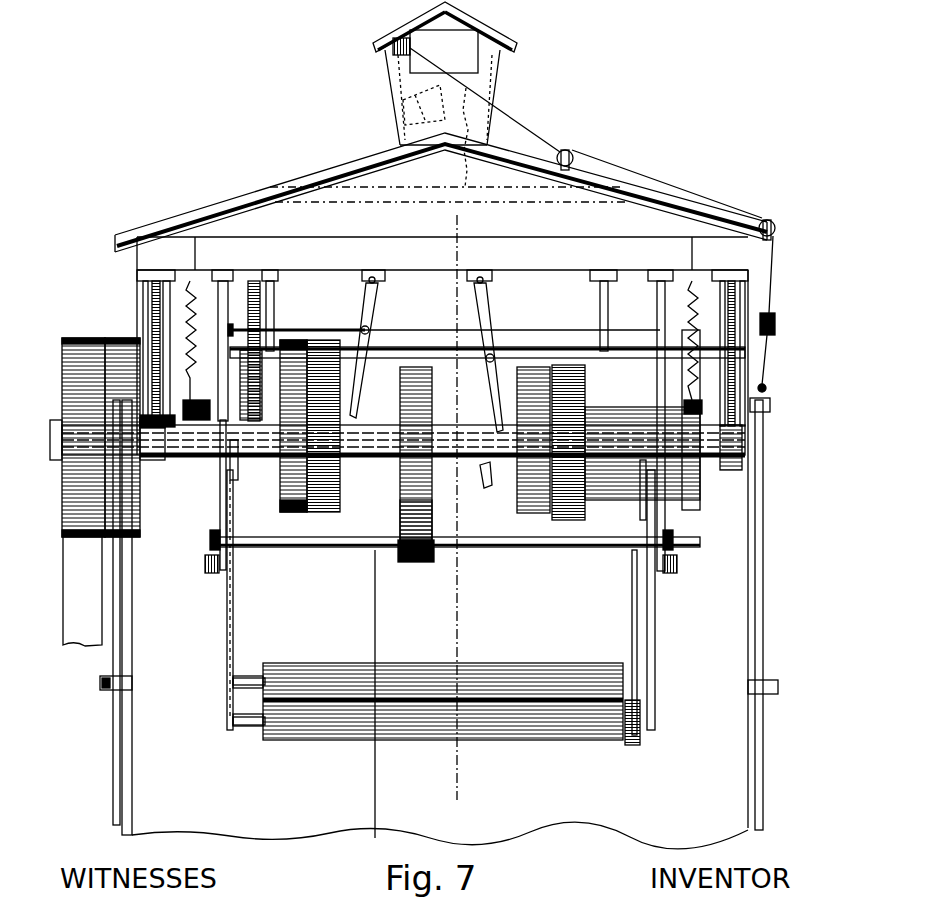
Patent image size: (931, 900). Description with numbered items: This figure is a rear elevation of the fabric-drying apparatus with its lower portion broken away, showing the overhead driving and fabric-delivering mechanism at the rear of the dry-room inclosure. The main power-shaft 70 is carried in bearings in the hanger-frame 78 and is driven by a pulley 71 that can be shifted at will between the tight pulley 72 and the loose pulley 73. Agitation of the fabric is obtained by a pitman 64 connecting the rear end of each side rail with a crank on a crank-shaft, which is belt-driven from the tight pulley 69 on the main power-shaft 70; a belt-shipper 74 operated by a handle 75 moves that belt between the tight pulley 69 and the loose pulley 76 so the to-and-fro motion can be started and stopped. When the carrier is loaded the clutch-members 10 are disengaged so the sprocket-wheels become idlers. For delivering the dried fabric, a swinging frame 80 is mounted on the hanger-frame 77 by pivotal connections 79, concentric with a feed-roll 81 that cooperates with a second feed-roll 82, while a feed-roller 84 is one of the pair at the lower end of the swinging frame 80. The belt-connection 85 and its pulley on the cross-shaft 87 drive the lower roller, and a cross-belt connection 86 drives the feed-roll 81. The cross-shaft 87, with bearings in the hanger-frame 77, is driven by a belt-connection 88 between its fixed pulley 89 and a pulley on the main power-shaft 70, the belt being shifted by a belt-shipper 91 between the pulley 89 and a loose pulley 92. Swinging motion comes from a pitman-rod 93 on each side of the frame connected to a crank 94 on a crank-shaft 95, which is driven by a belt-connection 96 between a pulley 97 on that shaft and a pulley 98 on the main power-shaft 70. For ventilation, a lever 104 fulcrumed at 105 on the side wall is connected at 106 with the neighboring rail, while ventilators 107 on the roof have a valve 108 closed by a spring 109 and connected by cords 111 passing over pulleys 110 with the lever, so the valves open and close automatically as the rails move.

The clutch-members 10 is at (468, 510).
The pitman 64 is at (695, 408).
The pulley 69 is at (590, 510).
The main power-shaft 70 is at (465, 470).
The pulley 71 is at (95, 600).
The tight pulley 72 is at (120, 338).
The loose pulley 73 is at (62, 338).
The belt-shipper 74 is at (492, 342).
The handle 75 is at (495, 470).
The loose pulley 76 is at (524, 508).
The hanger-frame 77 is at (665, 515).
The hanger-frame 78 is at (735, 365).
The pivotal connections 79 is at (655, 470).
The swinging frame 80 is at (652, 640).
The feed-roll 81 is at (632, 480).
The feed-roll 82 is at (603, 410).
The feed-roller 84 is at (545, 670).
The belt-connection 85 is at (555, 735).
The cross-belt connection 86 is at (248, 300).
The cross-shaft 87 is at (388, 350).
The belt-connection 88 is at (278, 508).
The pulley 89 is at (261, 385).
The belt-shipper 91 is at (374, 305).
The loose pulley 92 is at (332, 330).
The pitman-rod 93 is at (677, 570).
The crank 94 is at (673, 548).
The crank-shaft 95 is at (553, 550).
The belt-connection 96 is at (407, 508).
The pulley 97 is at (435, 562).
The pulley 98 is at (432, 388).
The lever 104 is at (763, 520).
The fulcrum 105 is at (100, 684).
The connection 106 is at (772, 405).
The ventilators 107 is at (473, 62).
The valve 108 is at (428, 108).
The spring 109 is at (462, 165).
The pulleys 110 is at (792, 318).
The cords 111 is at (770, 268).